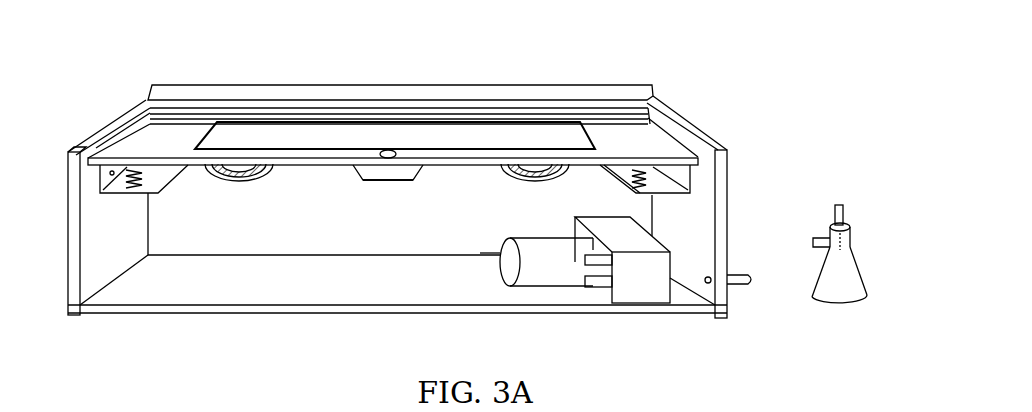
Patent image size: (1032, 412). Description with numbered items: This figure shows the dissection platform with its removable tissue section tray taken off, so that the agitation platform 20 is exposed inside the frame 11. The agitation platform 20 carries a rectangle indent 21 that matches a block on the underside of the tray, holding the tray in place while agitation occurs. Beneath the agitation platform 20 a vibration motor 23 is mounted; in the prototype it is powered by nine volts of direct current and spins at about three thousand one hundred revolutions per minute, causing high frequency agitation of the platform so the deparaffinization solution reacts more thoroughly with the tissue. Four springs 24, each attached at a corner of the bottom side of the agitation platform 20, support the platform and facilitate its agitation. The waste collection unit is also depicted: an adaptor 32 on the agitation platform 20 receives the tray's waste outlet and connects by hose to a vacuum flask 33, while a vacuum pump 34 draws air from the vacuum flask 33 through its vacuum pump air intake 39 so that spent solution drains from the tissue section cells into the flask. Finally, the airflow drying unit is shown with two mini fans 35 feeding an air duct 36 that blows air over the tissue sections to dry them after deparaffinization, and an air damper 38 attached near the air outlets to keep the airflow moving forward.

The frame 11 is at (727, 166).
The agitation platform 20 is at (143, 145).
The rectangle indent 21 is at (515, 135).
The vibration motor 23 is at (363, 180).
The springs 24 is at (100, 191).
The adaptor 32 is at (390, 172).
The vacuum flask 33 is at (845, 270).
The vacuum pump 34 is at (634, 275).
The mini fans 35 is at (540, 180).
The air duct 36 is at (362, 90).
The air damper 38 is at (195, 105).
The vacuum pump air intake 39 is at (585, 284).